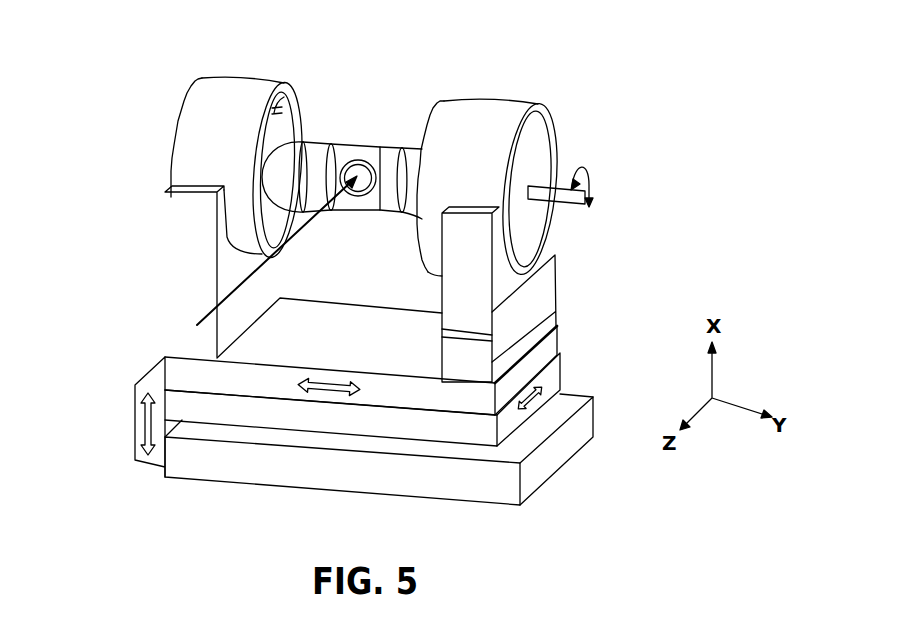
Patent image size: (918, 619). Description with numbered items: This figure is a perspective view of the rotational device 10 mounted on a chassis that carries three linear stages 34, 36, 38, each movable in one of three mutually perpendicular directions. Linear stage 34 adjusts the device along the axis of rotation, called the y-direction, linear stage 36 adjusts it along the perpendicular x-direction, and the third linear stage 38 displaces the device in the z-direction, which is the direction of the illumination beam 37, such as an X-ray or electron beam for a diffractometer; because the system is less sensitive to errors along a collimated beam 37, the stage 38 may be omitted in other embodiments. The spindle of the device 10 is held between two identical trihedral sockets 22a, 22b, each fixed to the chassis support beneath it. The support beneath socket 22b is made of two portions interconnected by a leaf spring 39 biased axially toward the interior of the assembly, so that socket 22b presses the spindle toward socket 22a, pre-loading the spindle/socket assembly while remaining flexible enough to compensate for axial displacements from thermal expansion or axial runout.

The rotational device 10 is at (360, 131).
The trihedral socket 22a is at (195, 90).
The trihedral socket 22b is at (503, 112).
The linear stage 34 is at (183, 372).
The linear stage 36 is at (135, 438).
The illumination beam 37 is at (230, 293).
The linear stage 38 is at (558, 383).
The leaf spring 39 is at (552, 297).